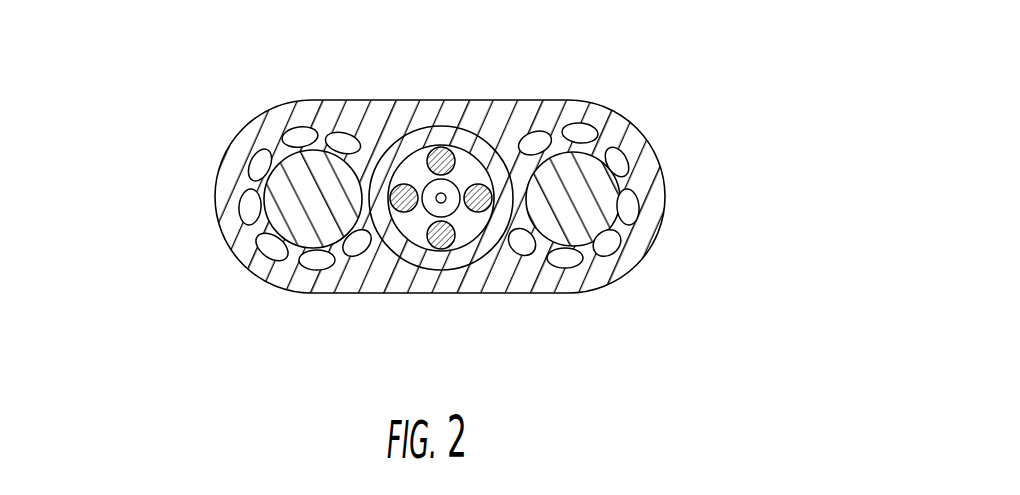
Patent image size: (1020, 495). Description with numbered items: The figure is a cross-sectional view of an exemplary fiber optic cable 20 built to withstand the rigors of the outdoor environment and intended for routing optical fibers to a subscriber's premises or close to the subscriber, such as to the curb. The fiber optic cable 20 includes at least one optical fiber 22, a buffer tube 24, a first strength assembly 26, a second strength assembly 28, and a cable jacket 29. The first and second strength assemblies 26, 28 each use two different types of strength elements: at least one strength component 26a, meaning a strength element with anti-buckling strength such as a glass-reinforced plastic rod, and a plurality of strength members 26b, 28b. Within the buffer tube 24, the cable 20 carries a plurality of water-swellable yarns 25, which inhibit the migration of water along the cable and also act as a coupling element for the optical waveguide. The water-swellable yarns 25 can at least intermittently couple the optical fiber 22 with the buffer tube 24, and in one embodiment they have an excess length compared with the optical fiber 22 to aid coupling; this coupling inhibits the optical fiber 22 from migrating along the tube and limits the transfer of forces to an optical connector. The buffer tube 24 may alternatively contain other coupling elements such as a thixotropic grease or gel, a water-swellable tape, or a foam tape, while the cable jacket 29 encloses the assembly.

The fiber optic cable 20 is at (438, 189).
The optical fiber 22 is at (503, 253).
The buffer tube 24 is at (435, 258).
The water-swellable yarns 25 is at (478, 185).
The first strength assembly 26 is at (476, 194).
The strength component 26a is at (574, 178).
The strength members 26b is at (607, 245).
The second strength assembly 28 is at (202, 199).
The strength members 28b is at (290, 142).
The cable jacket 29 is at (363, 283).